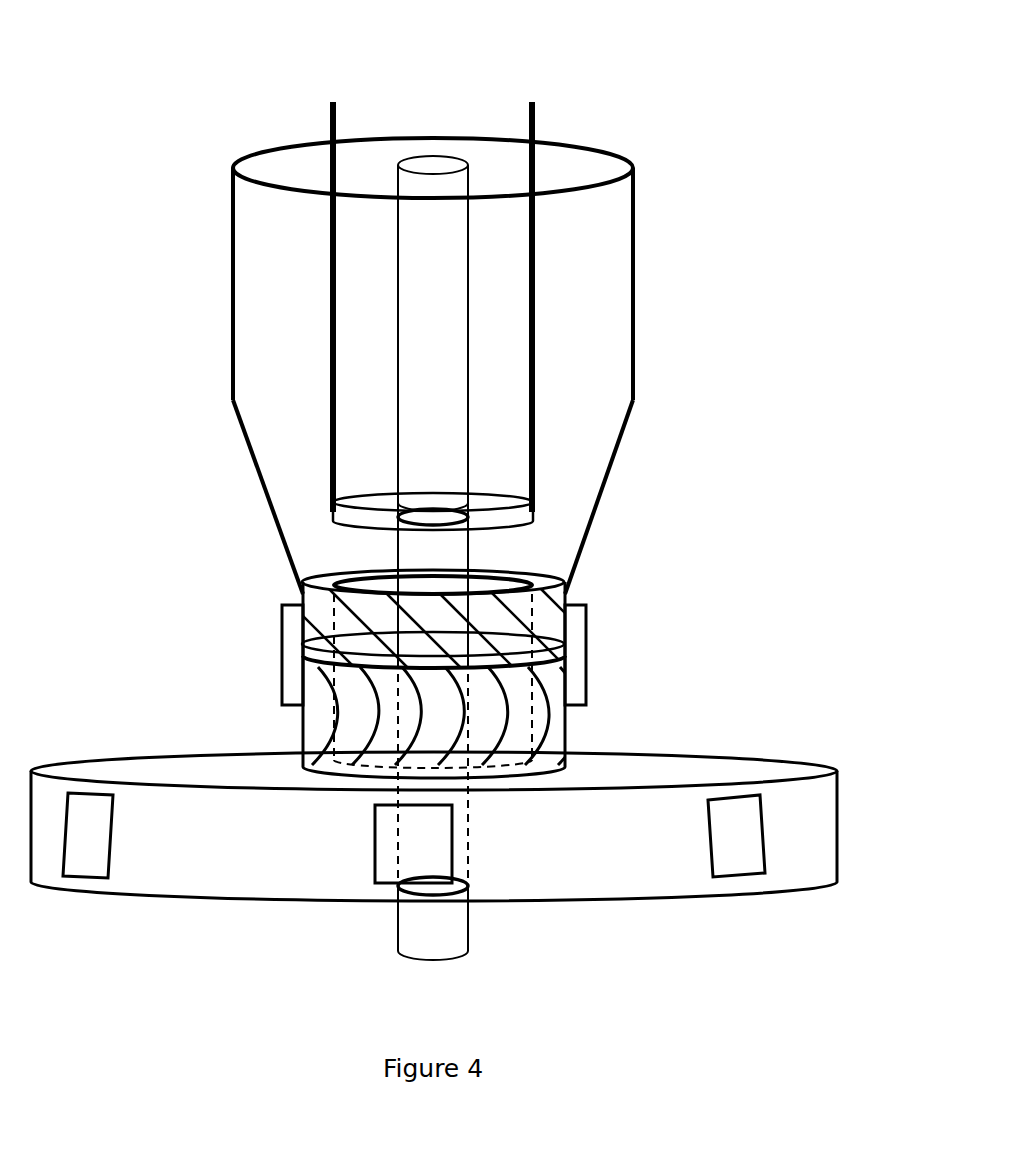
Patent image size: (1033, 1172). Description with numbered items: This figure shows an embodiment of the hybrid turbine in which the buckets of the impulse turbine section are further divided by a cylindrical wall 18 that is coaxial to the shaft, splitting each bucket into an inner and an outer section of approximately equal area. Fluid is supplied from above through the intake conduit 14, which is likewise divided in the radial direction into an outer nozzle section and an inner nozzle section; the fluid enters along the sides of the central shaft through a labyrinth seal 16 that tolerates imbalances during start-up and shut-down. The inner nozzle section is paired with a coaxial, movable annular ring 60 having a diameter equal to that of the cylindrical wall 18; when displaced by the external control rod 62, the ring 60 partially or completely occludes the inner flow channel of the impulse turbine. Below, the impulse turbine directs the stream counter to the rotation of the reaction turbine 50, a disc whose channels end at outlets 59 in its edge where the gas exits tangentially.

The intake conduit 14 is at (302, 591).
The labyrinth seal 16 is at (282, 655).
The cylindrical wall 18 is at (507, 570).
The reaction turbine 50 is at (197, 900).
The outlet 59 is at (730, 845).
The annular ring 60 is at (330, 513).
The control rod 62 is at (540, 120).